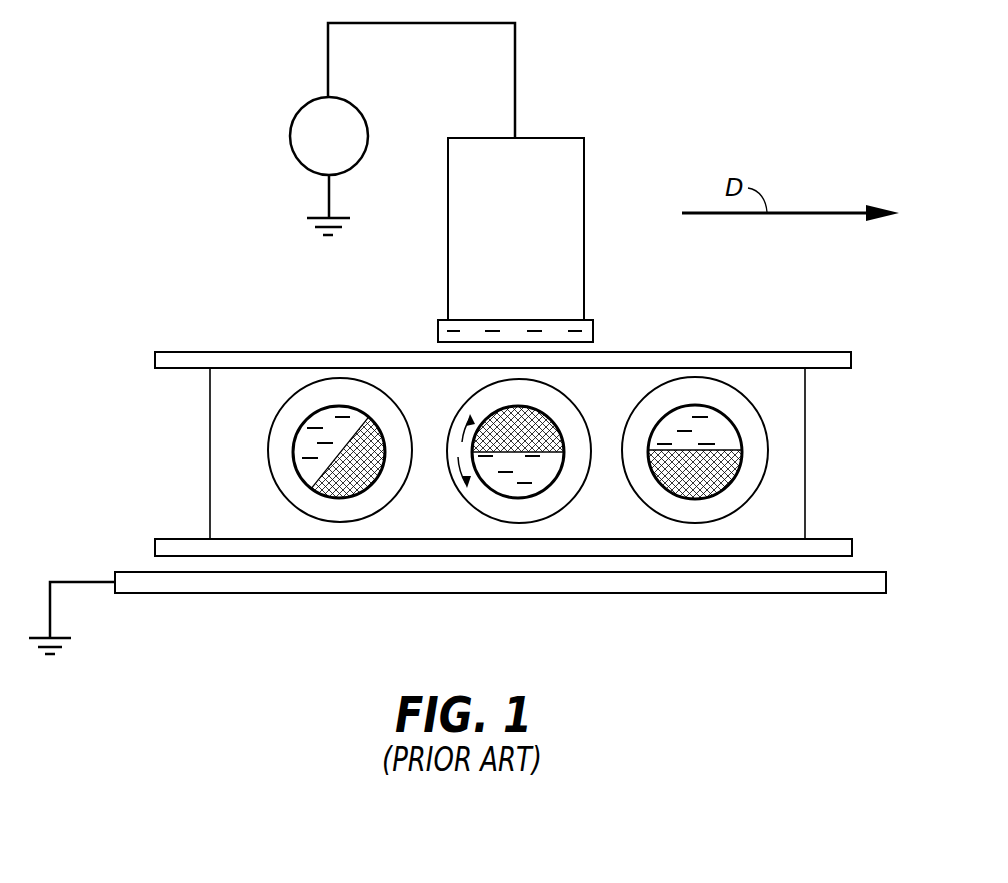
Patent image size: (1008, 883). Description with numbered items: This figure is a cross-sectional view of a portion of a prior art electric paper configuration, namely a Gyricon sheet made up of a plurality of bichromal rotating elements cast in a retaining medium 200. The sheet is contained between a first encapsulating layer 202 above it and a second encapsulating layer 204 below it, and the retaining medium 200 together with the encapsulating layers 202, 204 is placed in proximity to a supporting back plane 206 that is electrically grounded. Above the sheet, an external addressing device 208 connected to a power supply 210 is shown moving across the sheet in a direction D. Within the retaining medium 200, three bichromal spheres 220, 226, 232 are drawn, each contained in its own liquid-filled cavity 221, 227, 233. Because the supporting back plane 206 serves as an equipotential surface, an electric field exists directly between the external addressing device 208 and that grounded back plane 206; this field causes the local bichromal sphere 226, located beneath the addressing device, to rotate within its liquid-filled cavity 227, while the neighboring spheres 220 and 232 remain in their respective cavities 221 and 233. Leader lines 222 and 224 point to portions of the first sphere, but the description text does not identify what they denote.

The retaining medium 200 is at (217, 465).
The first encapsulating layer 202 is at (155, 360).
The second encapsulating layer 204 is at (158, 547).
The supporting back plane 206 is at (167, 588).
The external addressing device 208 is at (585, 153).
The power supply 210 is at (300, 125).
The bichromal sphere 220 is at (309, 405).
The liquid-filled cavity 221 is at (335, 395).
The toner layer 222 is at (315, 467).
The liquid carrier 224 is at (328, 502).
The bichromal sphere 226 is at (562, 412).
The liquid-filled cavity 227 is at (577, 460).
The bichromal sphere 232 is at (715, 398).
The liquid-filled cavity 233 is at (752, 430).